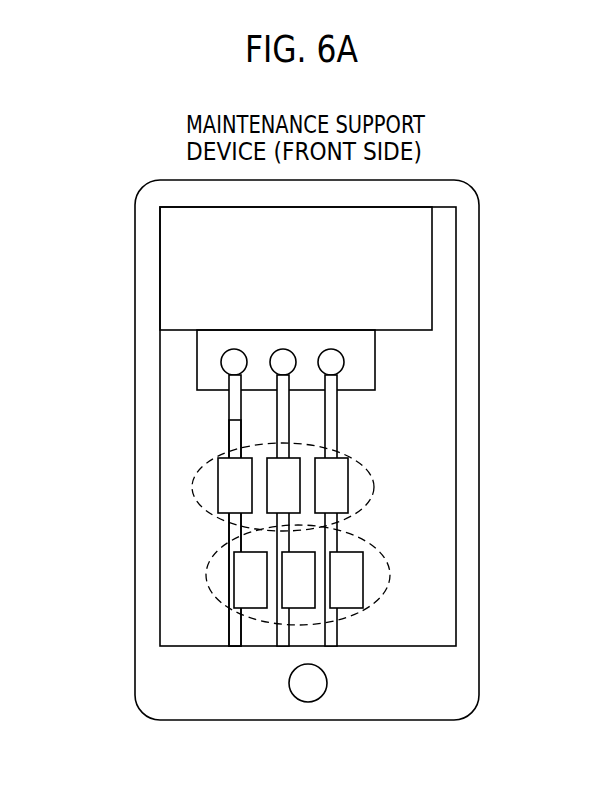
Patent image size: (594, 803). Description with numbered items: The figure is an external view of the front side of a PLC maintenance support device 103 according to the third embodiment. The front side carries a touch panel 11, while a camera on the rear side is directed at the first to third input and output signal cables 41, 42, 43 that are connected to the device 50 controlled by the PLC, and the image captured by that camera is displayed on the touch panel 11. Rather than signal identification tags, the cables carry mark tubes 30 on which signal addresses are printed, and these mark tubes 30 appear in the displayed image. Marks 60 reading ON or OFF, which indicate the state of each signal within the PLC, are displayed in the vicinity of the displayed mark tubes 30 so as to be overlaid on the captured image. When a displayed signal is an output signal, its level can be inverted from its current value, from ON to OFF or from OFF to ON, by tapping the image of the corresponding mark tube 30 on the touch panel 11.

The PLC maintenance support device 103 is at (480, 235).
The touch panel 11 is at (456, 282).
The device 50 is at (173, 264).
The first input and output signal cable 41 is at (337, 416).
The second input and output signal cable 42 is at (229, 420).
The third input and output signal cable 43 is at (229, 433).
The mark tube 30 is at (373, 477).
The mark 60 is at (385, 563).